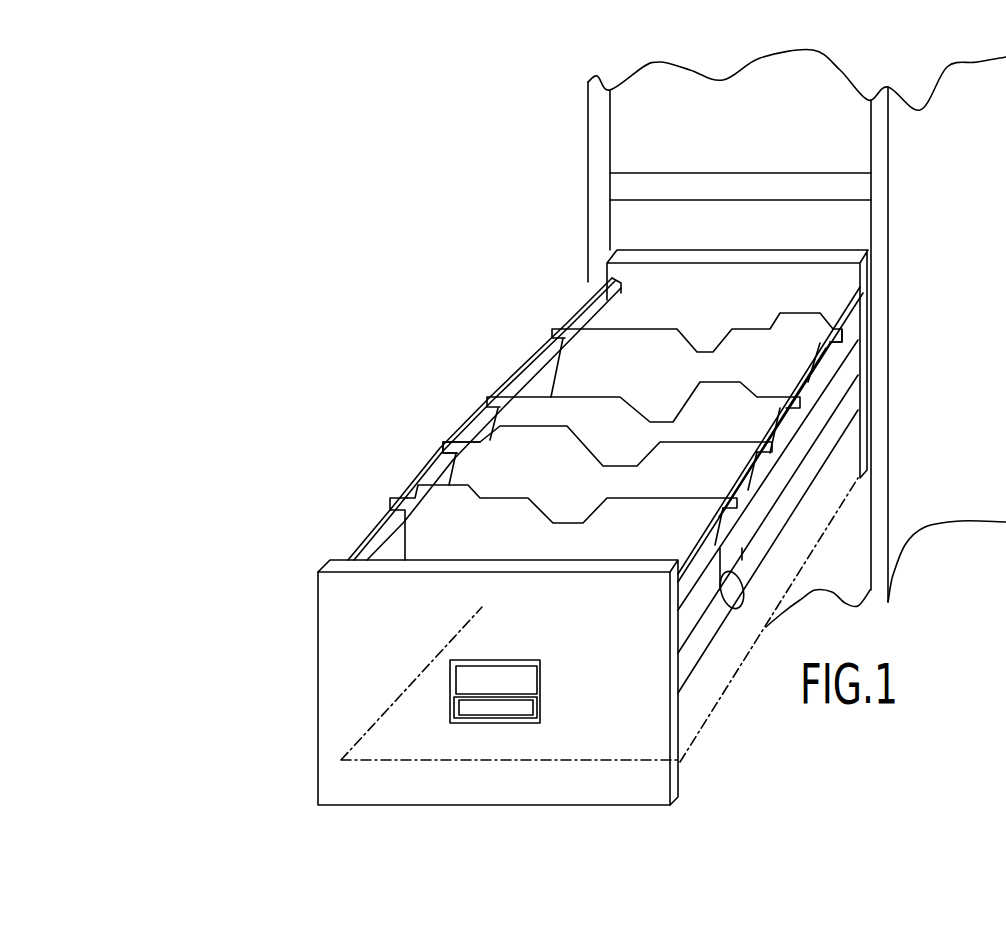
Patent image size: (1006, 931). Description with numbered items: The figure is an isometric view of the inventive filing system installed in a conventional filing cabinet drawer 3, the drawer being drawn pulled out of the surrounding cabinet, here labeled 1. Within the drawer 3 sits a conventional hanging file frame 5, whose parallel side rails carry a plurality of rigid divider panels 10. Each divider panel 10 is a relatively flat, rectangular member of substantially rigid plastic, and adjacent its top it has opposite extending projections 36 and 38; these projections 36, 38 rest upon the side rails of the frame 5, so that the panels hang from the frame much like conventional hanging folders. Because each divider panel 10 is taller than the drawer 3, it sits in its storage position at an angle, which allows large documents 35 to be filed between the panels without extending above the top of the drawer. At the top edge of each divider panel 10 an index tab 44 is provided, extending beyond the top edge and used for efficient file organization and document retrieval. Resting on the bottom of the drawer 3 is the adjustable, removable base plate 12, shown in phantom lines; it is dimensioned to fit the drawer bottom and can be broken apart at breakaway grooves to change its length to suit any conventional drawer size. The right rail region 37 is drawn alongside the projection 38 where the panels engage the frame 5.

The cabinet frame 1 is at (727, 70).
The filing cabinet drawer 3 is at (340, 613).
The hanging file frame 5 is at (535, 352).
The divider panel 10 is at (433, 537).
The base plate 12 is at (467, 762).
The large documents 35 is at (723, 547).
The projection 36 is at (432, 446).
The right support rail 37 is at (832, 345).
The projection 38 is at (845, 328).
The index tab 44 is at (805, 325).